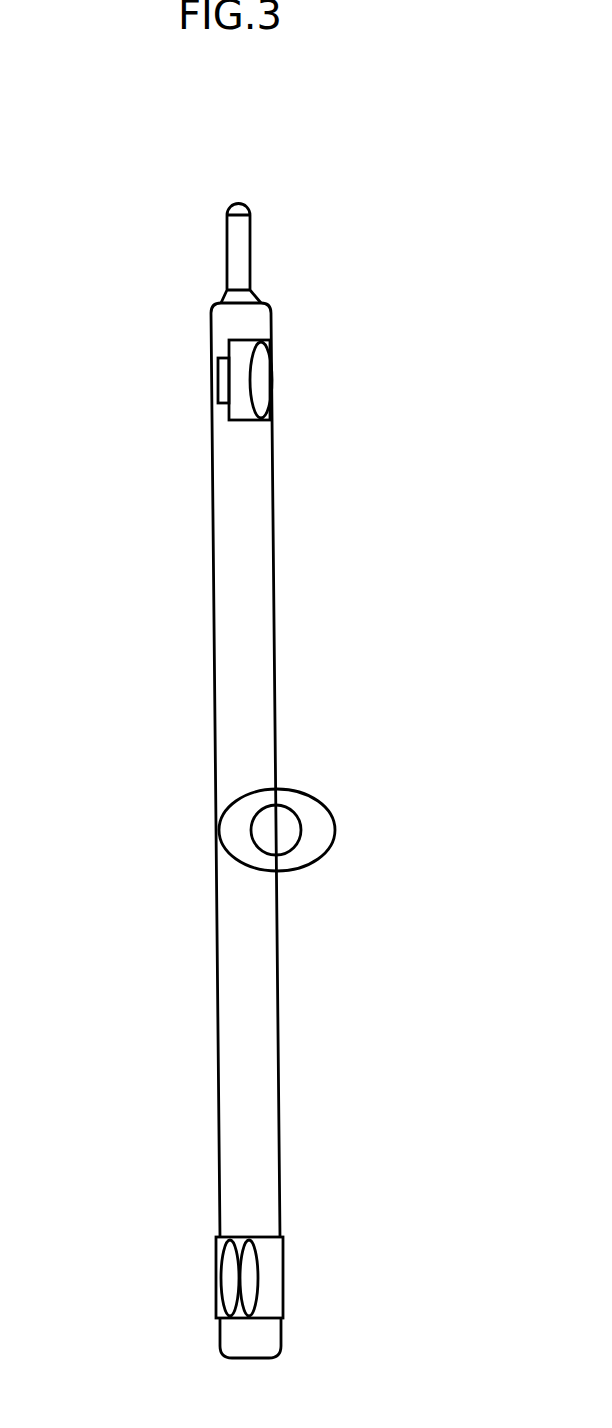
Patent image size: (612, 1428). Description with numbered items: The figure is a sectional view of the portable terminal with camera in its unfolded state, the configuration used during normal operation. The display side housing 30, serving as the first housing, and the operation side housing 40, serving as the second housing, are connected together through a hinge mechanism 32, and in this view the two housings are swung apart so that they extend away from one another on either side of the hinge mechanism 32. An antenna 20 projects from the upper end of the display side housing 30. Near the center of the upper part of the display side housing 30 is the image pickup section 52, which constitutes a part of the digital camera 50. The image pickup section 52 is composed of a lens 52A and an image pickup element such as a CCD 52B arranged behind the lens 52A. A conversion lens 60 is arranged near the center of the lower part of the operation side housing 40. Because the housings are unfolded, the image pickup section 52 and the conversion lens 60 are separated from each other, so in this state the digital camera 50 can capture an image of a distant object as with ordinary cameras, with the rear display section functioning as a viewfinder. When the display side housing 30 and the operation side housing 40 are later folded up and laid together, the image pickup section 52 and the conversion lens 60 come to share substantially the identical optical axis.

The antenna 20 is at (237, 248).
The display side housing 30 is at (230, 565).
The hinge mechanism 32 is at (320, 832).
The operation side housing 40 is at (233, 988).
The digital camera 50 is at (196, 409).
The image pickup section 52 is at (243, 338).
The lens 52A is at (262, 380).
The CCD 52B is at (218, 368).
The conversion lens 60 is at (217, 1277).